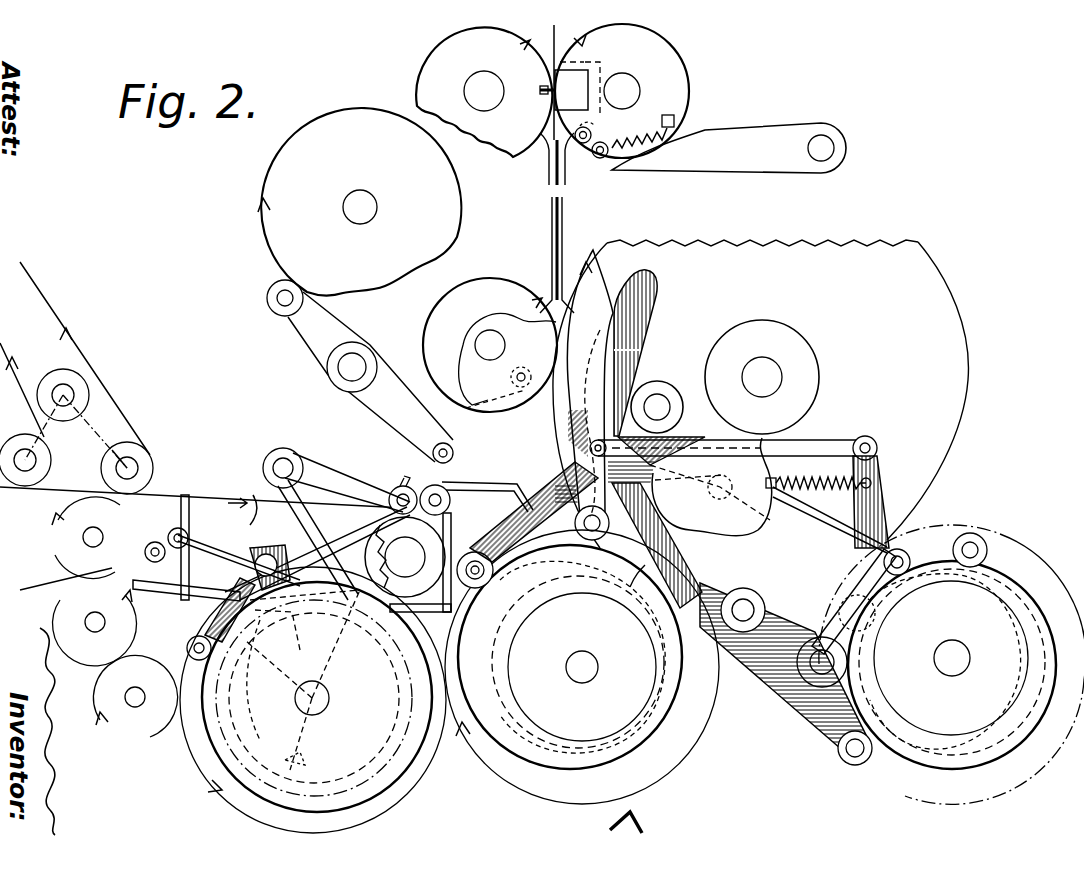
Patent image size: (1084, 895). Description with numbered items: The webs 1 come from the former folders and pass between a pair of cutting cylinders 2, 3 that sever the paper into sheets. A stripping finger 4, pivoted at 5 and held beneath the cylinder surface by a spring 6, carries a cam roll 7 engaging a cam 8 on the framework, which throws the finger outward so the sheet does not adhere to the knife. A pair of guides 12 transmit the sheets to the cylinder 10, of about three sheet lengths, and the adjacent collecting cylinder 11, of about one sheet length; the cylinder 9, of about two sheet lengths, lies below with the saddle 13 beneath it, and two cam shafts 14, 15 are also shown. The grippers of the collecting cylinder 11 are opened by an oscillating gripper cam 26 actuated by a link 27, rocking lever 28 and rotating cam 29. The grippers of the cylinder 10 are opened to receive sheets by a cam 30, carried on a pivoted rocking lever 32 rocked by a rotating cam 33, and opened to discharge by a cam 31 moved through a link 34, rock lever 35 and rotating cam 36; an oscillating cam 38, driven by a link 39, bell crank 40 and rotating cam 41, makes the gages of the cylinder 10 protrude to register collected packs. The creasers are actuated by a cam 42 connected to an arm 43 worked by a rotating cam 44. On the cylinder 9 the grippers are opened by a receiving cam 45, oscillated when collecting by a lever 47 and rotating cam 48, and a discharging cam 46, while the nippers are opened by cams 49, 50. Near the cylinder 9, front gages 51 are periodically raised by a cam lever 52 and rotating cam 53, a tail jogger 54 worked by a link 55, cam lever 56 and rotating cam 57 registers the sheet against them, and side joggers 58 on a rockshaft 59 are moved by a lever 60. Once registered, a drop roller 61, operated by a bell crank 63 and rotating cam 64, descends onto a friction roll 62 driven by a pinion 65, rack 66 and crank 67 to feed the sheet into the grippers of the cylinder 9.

The web 1 is at (563, 29).
The cutting cylinder 2 is at (484, 92).
The cutting cylinder 3 is at (622, 91).
The stripping finger 4 is at (600, 62).
The pivot 5 is at (591, 129).
The spring 6 is at (674, 117).
The cam roll 7 is at (600, 158).
The cam 8 is at (729, 148).
The cylinder 9 is at (569, 657).
The second cylinder 10 is at (761, 394).
The collecting cylinder 11 is at (490, 345).
The guides 12 is at (550, 210).
The saddle 13 is at (648, 816).
The cam shaft 14 is at (317, 697).
The cam shaft 15 is at (952, 665).
The oscillating gripper cam 26 is at (521, 388).
The link 27 is at (455, 443).
The rocking lever 28 is at (360, 371).
The rotating cam 29 is at (359, 202).
The cam 30 is at (631, 285).
The cam 31 is at (711, 487).
The pivoted rocking lever 32 is at (630, 370).
The rotating cam 33 is at (656, 692).
The link 34 is at (826, 515).
The rock lever 35 is at (842, 590).
The rotating cam 36 is at (870, 772).
The oscillating cam 38 is at (587, 345).
The link 39 is at (832, 446).
The bell crank 40 is at (880, 500).
The rotating cam 41 is at (1034, 538).
The cam 42 is at (681, 462).
The arm 43 is at (540, 512).
The rotating cam 44 is at (448, 657).
The cam 45 is at (503, 593).
The cam 46 is at (522, 753).
The lever 47 is at (768, 656).
The rotating cam 48 is at (918, 770).
The cam 49 is at (630, 587).
The cam 50 is at (517, 737).
The front gages 51 is at (521, 474).
The cam lever 52 is at (268, 547).
The rotating cam 53 is at (236, 770).
The tail jogger 54 is at (101, 470).
The link 55 is at (202, 546).
The cam lever 56 is at (206, 627).
The rotating cam 57 is at (245, 726).
The side joggers 58 is at (463, 517).
The rockshaft 59 is at (165, 598).
The lever 60 is at (244, 496).
The drop roller 61 is at (400, 488).
The friction roll 62 is at (405, 557).
The bell crank 63 is at (344, 526).
The rotating cam 64 is at (309, 680).
The pinion 65 is at (390, 632).
The rack 66 is at (305, 466).
The crank 67 is at (296, 760).